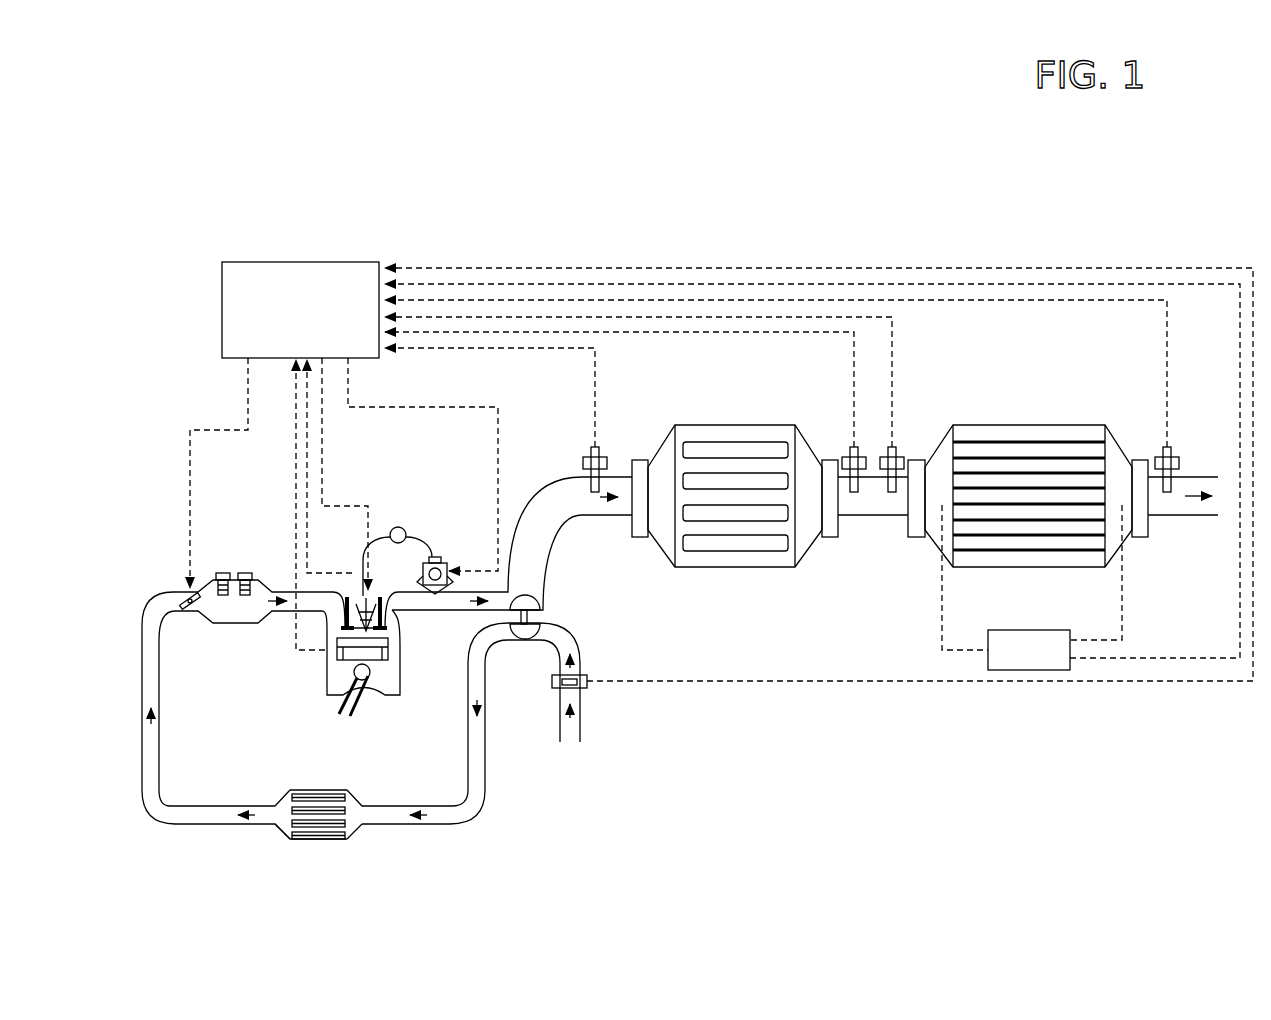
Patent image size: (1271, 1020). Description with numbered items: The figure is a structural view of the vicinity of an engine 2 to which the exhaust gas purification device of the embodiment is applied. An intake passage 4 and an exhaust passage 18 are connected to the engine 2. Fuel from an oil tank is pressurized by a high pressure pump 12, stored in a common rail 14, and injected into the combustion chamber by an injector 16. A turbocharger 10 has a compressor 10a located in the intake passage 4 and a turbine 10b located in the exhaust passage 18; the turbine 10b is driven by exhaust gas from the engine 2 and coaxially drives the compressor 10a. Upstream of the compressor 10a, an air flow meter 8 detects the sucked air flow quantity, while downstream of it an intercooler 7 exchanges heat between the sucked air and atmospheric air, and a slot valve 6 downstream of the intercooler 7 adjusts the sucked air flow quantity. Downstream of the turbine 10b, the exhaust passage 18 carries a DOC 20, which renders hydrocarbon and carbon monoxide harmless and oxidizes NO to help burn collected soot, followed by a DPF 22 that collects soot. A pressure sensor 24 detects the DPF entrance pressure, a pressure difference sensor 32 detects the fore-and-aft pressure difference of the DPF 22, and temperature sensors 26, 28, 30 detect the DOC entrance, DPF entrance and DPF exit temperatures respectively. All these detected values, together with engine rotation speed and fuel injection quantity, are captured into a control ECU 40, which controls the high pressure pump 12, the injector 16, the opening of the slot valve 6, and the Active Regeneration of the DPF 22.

The engine 2 is at (327, 660).
The intake passage 4 is at (142, 757).
The slot valve 6 is at (187, 609).
The intercooler 7 is at (302, 790).
The air flow meter 8 is at (590, 688).
The turbocharger 10 is at (568, 617).
The compressor 10a is at (524, 642).
The turbine 10b is at (527, 597).
The high pressure pump 12 is at (436, 556).
The common rail 14 is at (394, 524).
The injector 16 is at (358, 596).
The exhaust passage 18 is at (450, 612).
The DOC 20 is at (705, 425).
The DPF 22 is at (990, 425).
The pressure sensor 24 is at (895, 447).
The temperature sensor 26 is at (590, 454).
The temperature sensor 28 is at (853, 447).
The temperature sensor 30 is at (1170, 447).
The pressure difference sensor 32 is at (1000, 630).
The control ECU 40 is at (242, 262).